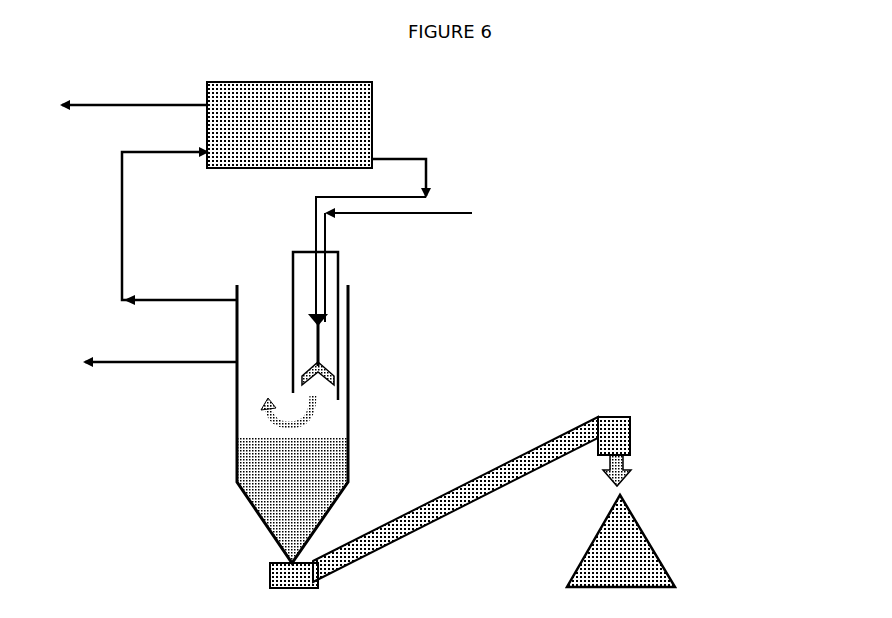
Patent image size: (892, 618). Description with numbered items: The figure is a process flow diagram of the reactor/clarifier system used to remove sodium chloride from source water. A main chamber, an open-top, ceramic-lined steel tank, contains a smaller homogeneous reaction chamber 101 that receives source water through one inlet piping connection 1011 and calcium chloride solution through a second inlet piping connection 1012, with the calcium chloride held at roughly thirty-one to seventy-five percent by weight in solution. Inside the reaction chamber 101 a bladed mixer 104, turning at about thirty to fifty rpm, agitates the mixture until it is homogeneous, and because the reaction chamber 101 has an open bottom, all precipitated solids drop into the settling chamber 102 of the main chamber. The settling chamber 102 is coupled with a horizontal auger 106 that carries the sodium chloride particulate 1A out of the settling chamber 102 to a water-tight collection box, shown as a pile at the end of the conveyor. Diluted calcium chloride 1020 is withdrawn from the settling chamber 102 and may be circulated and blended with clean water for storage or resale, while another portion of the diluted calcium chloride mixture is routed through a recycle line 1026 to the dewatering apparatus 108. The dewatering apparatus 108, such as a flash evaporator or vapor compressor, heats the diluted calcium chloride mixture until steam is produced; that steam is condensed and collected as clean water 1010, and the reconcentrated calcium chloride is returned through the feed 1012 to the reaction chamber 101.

The dewatering apparatus 108 is at (357, 112).
The clean water 1010 is at (134, 94).
The recycle stream line 1026 is at (153, 228).
The calcium chloride feed 1012 is at (397, 238).
The source water feed 1011 is at (419, 262).
The diluted calcium chloride 1020 is at (161, 347).
The horizontal auger 106 is at (325, 470).
The reaction chamber 101 is at (340, 302).
The bladed mixer 104 is at (325, 352).
The settling chamber 102 is at (326, 415).
The sodium chloride particulate 1A is at (630, 540).